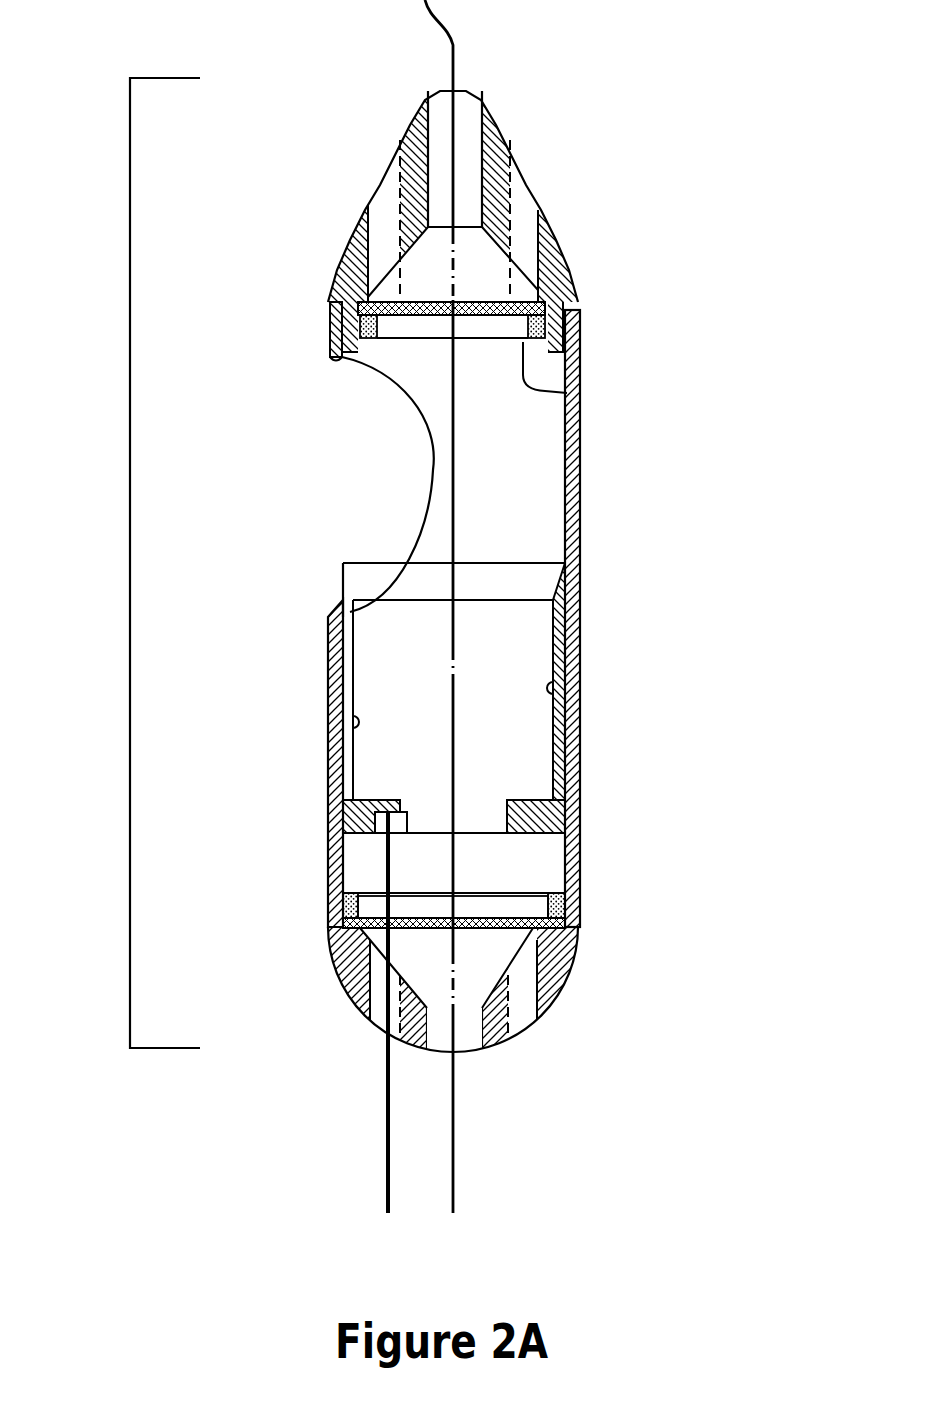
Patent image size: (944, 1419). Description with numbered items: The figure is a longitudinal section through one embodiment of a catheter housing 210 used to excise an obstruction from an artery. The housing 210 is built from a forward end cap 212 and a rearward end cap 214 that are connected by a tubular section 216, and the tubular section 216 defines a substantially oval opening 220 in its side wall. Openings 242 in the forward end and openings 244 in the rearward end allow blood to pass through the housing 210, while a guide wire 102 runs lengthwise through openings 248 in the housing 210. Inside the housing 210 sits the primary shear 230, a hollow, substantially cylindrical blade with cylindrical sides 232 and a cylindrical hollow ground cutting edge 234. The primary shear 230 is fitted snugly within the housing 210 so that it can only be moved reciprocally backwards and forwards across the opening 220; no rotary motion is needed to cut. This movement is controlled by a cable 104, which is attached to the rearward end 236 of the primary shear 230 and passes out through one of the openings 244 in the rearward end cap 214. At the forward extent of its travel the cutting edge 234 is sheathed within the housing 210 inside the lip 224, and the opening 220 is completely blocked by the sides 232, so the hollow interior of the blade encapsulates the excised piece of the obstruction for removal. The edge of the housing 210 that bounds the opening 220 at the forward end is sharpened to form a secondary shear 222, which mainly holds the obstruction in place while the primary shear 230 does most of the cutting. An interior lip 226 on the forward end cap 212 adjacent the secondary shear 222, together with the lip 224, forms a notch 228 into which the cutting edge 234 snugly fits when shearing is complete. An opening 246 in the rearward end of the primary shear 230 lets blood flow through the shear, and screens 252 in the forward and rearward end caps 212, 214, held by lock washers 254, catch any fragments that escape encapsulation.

The guide wire 102 is at (455, 1187).
The cable 104 is at (382, 1187).
The housing 210 is at (124, 563).
The forward end cap 212 is at (563, 242).
The rearward end cap 214 is at (573, 973).
The tubular section 216 is at (580, 575).
The oval opening 220 is at (382, 462).
The secondary shear 222 is at (338, 360).
The lip 224 is at (330, 310).
The interior lip 226 is at (565, 335).
The notch 228 is at (342, 355).
The primary shear 230 is at (580, 641).
The sides 232 is at (564, 691).
The cutting edge 234 is at (343, 565).
The rearward end 236 is at (565, 817).
The openings 242 is at (520, 187).
The openings 244 is at (515, 1028).
The opening 246 is at (460, 812).
The openings 248 is at (460, 1050).
The screens 252 is at (692, 864).
The lock washers 254 is at (692, 924).